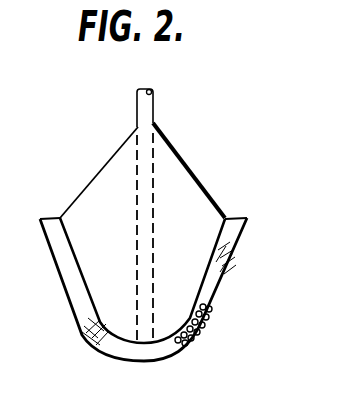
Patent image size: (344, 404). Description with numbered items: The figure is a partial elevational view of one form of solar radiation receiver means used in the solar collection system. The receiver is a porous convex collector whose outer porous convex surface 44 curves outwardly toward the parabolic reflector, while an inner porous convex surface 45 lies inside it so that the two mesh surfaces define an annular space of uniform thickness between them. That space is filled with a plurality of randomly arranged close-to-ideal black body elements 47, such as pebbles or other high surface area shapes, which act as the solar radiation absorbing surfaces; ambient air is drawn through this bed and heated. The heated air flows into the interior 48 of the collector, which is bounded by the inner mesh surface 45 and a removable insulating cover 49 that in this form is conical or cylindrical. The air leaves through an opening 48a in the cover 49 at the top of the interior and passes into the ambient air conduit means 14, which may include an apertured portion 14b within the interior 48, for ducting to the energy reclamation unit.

The ambient air conduit means 14 is at (153, 105).
The apertured portion 14b is at (155, 200).
The outer porous convex surface 44 is at (132, 289).
The inner porous convex surface 45 is at (88, 296).
The black body elements 47 is at (199, 328).
The interior 48 is at (148, 158).
The opening 48a is at (140, 127).
The removable insulating cover 49 is at (196, 174).